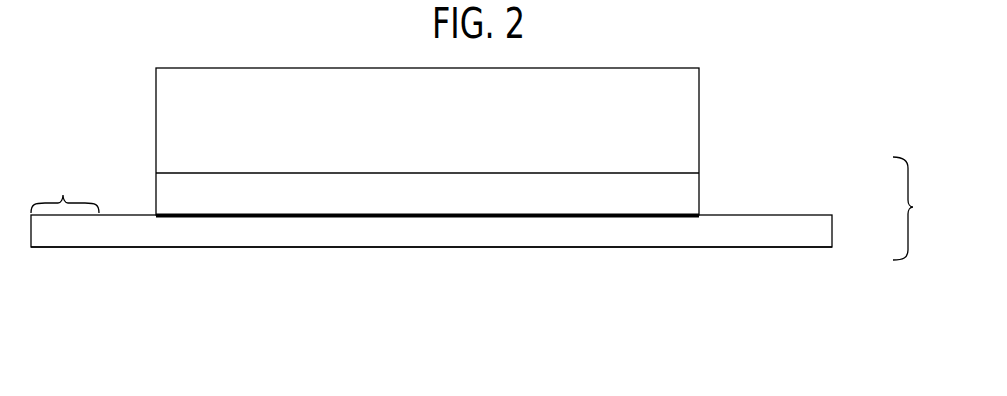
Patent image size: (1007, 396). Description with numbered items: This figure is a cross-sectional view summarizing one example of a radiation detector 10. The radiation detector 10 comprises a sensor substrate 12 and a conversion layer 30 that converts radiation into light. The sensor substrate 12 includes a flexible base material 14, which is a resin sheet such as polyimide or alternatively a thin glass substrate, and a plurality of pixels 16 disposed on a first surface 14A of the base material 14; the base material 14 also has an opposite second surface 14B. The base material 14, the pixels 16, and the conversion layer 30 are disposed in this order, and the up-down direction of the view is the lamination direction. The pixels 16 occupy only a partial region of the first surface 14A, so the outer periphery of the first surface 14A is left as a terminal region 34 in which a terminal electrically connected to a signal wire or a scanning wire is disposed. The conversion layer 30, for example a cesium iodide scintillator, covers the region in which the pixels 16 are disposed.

The radiation detector 10 is at (878, 365).
The sensor substrate 12 is at (920, 208).
The base material 14 is at (815, 232).
The first surface 14A is at (209, 213).
The second surface 14B is at (595, 249).
The pixels 16 is at (688, 184).
The conversion layer 30 is at (687, 122).
The terminal region 34 is at (65, 185).